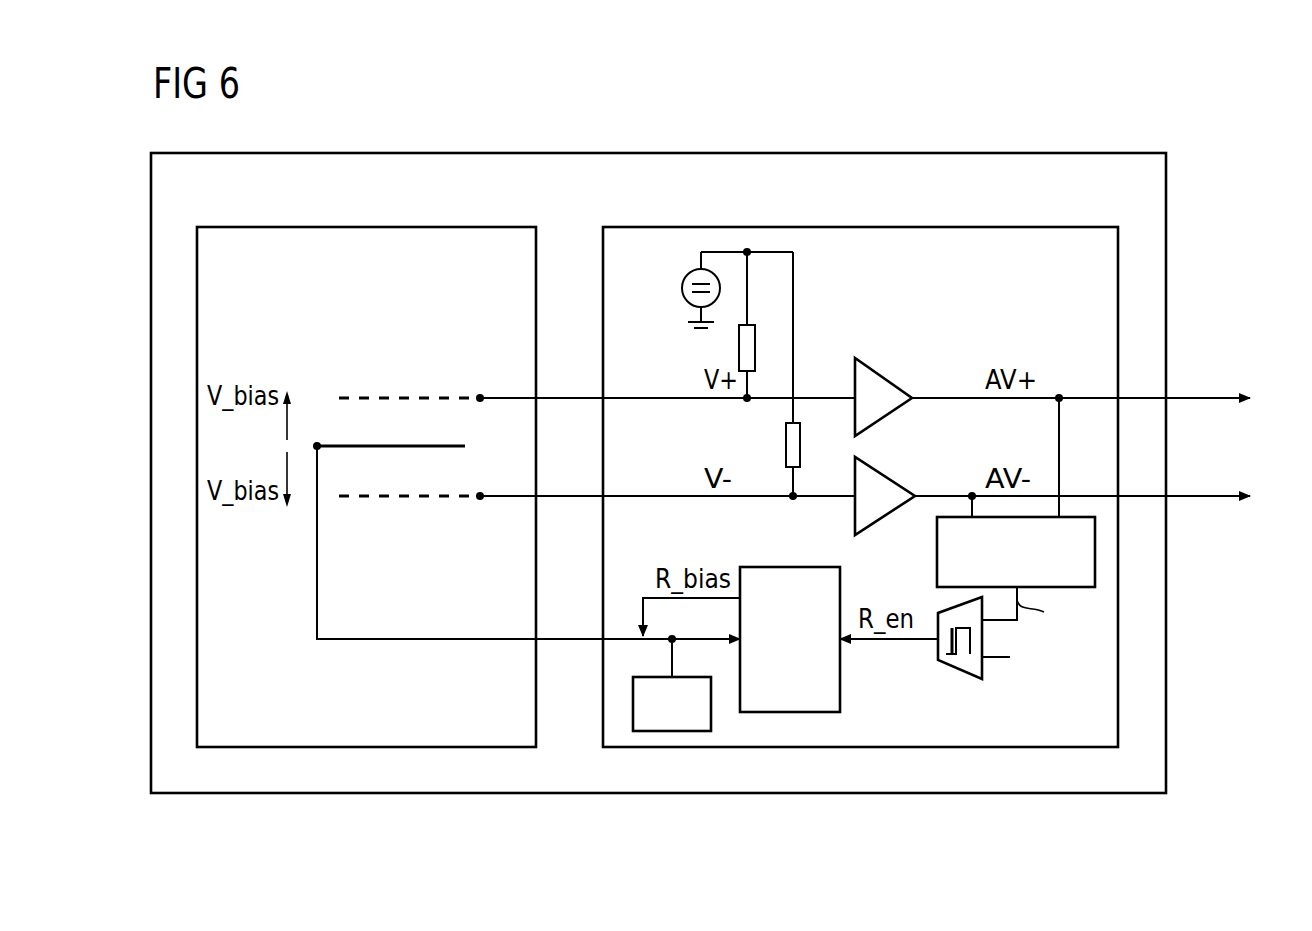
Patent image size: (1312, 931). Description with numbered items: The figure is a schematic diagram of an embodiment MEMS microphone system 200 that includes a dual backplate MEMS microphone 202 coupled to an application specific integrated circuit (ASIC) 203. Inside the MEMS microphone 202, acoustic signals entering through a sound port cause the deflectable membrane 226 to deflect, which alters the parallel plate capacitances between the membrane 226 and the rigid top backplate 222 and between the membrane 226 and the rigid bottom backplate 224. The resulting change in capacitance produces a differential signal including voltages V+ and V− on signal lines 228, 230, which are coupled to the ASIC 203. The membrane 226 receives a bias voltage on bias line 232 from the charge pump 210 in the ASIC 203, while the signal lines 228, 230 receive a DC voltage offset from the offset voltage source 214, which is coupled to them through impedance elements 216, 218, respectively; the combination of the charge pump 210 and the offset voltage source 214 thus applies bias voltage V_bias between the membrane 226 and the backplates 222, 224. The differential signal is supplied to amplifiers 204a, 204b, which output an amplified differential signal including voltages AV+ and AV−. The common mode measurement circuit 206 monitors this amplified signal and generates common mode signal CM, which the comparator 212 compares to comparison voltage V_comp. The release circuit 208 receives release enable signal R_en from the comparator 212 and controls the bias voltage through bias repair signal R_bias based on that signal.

The MEMS microphone system 200 is at (1214, 173).
The dual backplate MEMS microphone 202 is at (367, 226).
The application specific integrated circuit (ASIC) 203 is at (862, 226).
The amplifier 204a is at (886, 378).
The amplifier 204b is at (890, 474).
The common mode measurement circuit 206 is at (936, 550).
The release circuit 208 is at (790, 566).
The charge pump 210 is at (714, 706).
The comparator 212 is at (960, 674).
The offset voltage source 214 is at (686, 300).
The impedance element 216 is at (739, 346).
The impedance element 218 is at (786, 444).
The rigid top backplate 222 is at (365, 396).
The rigid bottom backplate 224 is at (457, 495).
The deflectable membrane 226 is at (325, 444).
The signal line 228 is at (563, 396).
The signal line 230 is at (563, 495).
The bias line 232 is at (563, 638).